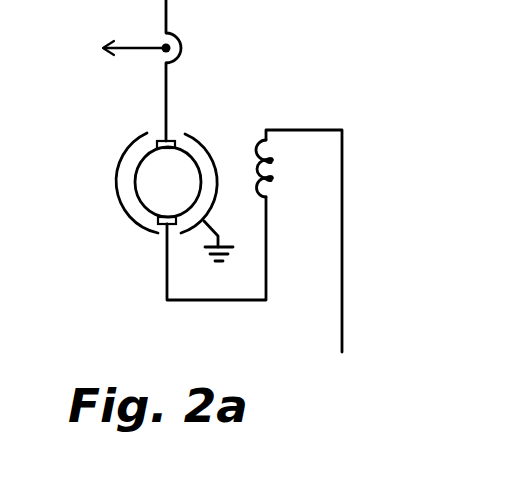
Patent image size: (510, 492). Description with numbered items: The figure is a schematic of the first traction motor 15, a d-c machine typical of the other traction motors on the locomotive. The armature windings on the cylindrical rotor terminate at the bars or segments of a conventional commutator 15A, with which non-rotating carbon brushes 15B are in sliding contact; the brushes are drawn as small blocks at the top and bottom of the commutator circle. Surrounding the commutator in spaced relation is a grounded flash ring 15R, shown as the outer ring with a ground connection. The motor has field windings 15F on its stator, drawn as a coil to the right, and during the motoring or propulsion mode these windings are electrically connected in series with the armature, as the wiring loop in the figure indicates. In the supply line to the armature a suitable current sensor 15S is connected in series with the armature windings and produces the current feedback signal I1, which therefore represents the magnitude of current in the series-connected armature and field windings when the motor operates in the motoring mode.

The first traction motor 15 is at (170, 359).
The current sensor 15S is at (181, 35).
The current feedback signal I1 is at (119, 48).
The commutator 15A is at (183, 150).
The flash ring 15R is at (120, 203).
The carbon brushes 15B is at (155, 143).
The field windings 15F is at (268, 177).